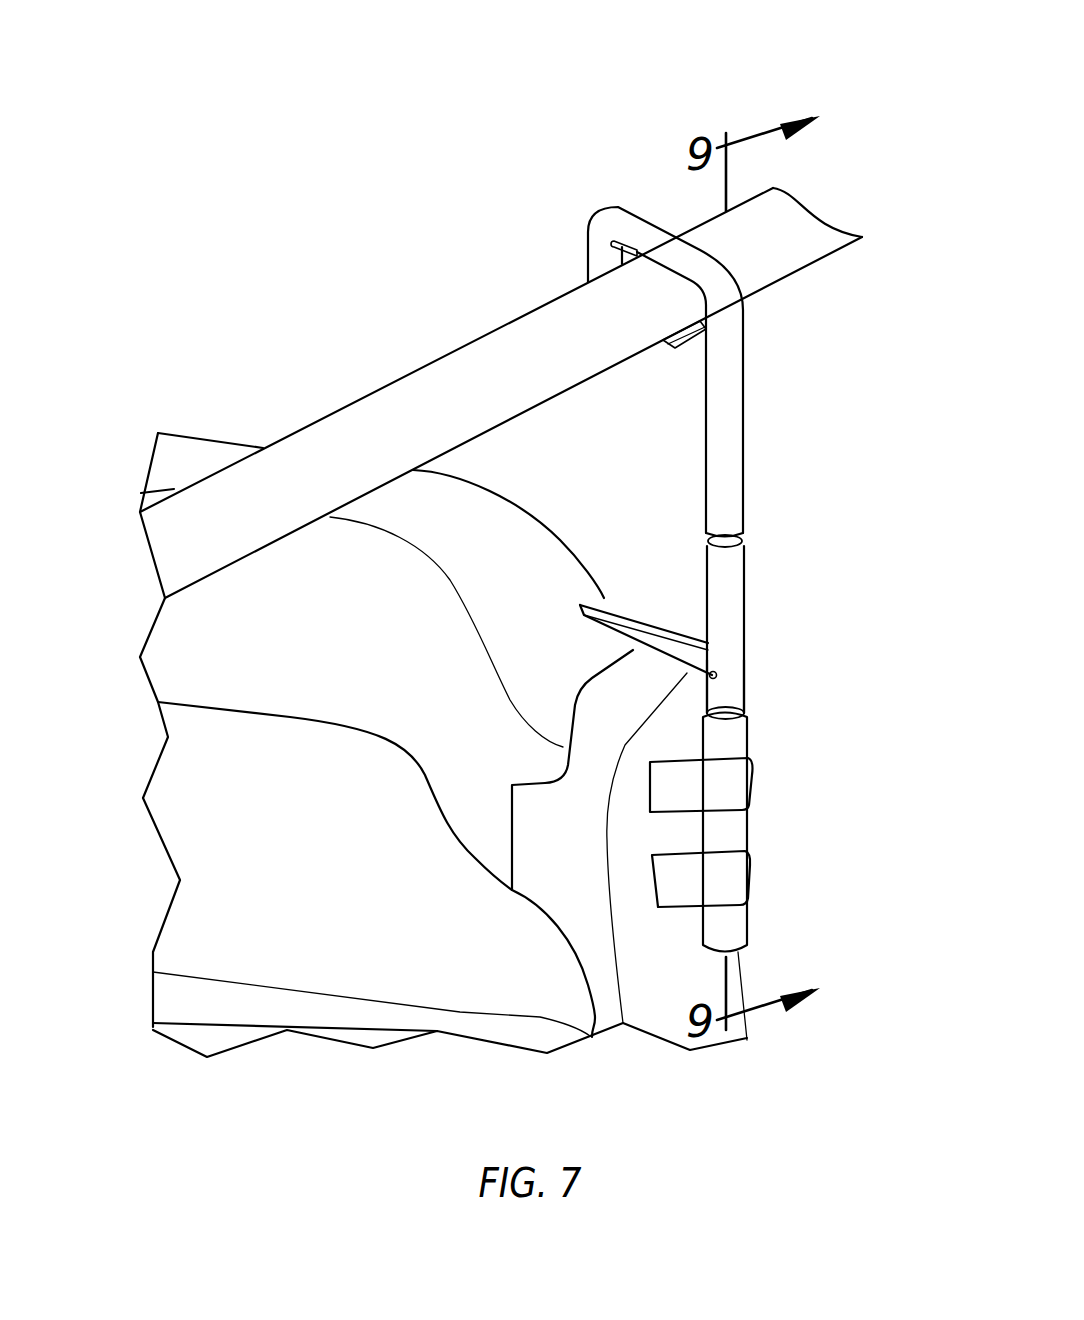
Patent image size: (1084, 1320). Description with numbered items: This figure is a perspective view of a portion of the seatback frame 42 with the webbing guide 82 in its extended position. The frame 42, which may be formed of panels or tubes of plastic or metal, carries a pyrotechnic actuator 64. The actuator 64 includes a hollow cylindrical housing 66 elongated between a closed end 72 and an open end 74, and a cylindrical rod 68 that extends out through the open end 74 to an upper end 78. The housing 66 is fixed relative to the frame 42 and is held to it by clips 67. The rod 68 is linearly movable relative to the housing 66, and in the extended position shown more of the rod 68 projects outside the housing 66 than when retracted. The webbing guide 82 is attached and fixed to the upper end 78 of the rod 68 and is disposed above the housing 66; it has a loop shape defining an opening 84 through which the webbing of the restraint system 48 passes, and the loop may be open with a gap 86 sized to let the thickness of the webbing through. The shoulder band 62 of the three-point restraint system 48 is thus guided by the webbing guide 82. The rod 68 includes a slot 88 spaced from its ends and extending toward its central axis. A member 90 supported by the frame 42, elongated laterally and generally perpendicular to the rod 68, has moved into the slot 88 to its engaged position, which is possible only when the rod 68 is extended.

The frame 42 is at (210, 433).
The restraint system 48 is at (577, 100).
The shoulder band 62 is at (272, 550).
The pyrotechnic actuator 64 is at (758, 599).
The housing 66 is at (750, 920).
The clamps 67 is at (750, 862).
The rod 68 is at (745, 685).
The closed end 72 is at (742, 952).
The open end 74 is at (747, 713).
The upper end 78 is at (748, 537).
The webbing guide 82 is at (622, 205).
The opening 84 is at (638, 243).
The gap 86 is at (688, 348).
The slot 88 is at (717, 675).
The member 90 is at (642, 612).